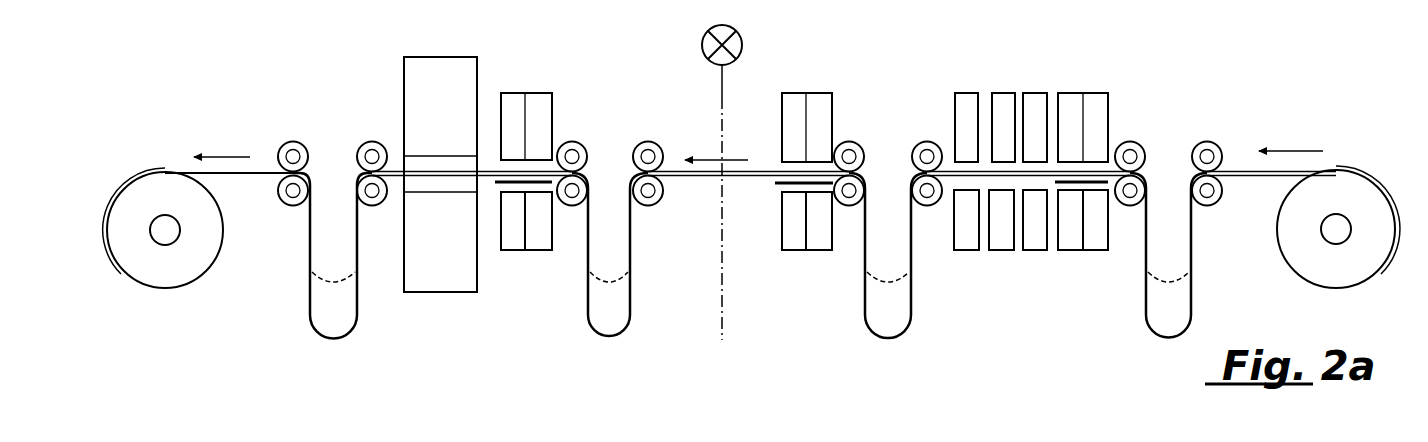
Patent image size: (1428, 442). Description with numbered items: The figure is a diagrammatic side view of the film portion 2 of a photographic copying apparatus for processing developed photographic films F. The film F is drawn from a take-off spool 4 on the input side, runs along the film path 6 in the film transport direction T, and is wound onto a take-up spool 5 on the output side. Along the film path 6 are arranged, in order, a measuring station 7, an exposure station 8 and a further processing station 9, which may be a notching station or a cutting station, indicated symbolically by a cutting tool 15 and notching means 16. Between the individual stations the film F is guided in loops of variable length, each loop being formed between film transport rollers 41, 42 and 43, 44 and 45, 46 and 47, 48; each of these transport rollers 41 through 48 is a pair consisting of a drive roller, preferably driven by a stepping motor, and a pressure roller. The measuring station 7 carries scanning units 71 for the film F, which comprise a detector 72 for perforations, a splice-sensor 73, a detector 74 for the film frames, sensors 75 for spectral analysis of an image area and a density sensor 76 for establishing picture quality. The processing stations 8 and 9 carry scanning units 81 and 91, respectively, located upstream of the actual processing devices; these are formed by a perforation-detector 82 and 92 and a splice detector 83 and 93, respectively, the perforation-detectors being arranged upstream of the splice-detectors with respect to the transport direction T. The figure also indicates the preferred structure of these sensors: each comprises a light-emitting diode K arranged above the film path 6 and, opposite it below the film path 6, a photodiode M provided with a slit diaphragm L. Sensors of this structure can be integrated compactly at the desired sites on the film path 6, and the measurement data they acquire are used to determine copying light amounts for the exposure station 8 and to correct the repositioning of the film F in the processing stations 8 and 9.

The film portion 2 is at (198, 125).
The take-off spool 4 is at (1352, 272).
The take-up spool 5 is at (160, 273).
The film path 6 is at (1312, 165).
The measuring station 7 is at (1109, 65).
The scanning units 71 is at (1117, 84).
The detector for perforations 72 is at (1096, 254).
The splice-sensor 73 is at (1069, 254).
The detector for the film frames 74 is at (1037, 254).
The sensors for the spectral analysis 75 is at (1000, 254).
The density sensor 76 is at (959, 254).
The exposure station 8 is at (818, 45).
The scanning unit 81 is at (845, 90).
The perforation-detector 82 is at (822, 254).
The splice detector 83 is at (790, 254).
The processing station 9 is at (541, 45).
The scanning unit 91 is at (497, 90).
The perforation-detector 92 is at (537, 254).
The splice detector 93 is at (510, 254).
The cutting tool 15 is at (391, 174).
The notching means 16 is at (402, 84).
The film transport rollers 41 is at (1220, 172).
The film transport rollers 42 is at (1142, 172).
The film transport rollers 43 is at (919, 172).
The film transport rollers 44 is at (858, 174).
The film transport rollers 45 is at (652, 174).
The film transport rollers 46 is at (582, 174).
The film transport rollers 47 is at (363, 170).
The film transport rollers 48 is at (282, 170).
The light-emitting diode K is at (542, 117).
The photodiode M is at (537, 228).
The slit diaphragm L is at (530, 185).
The film F is at (584, 299).
The film transport direction T is at (722, 160).